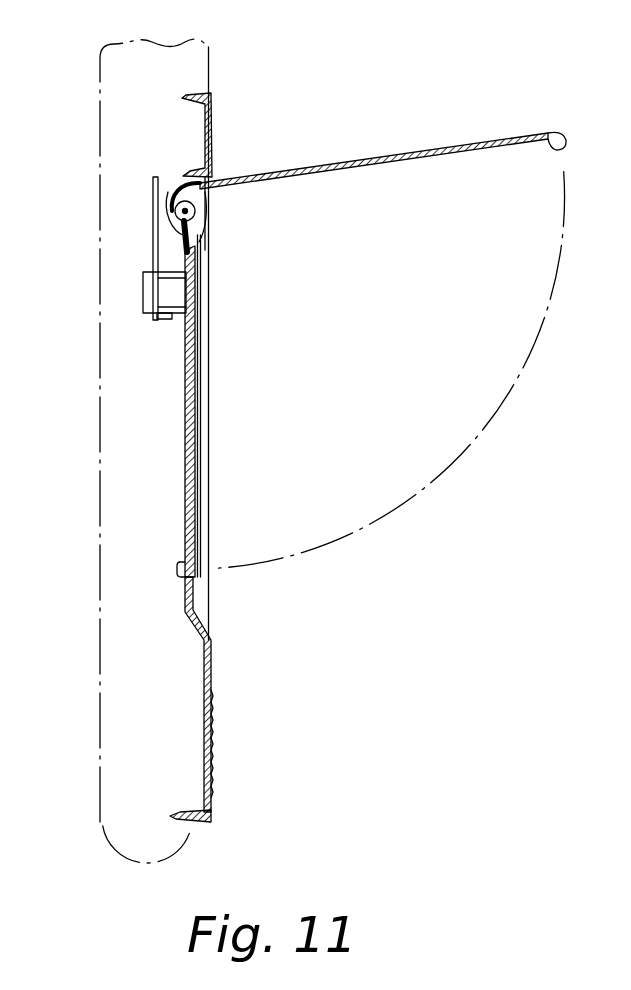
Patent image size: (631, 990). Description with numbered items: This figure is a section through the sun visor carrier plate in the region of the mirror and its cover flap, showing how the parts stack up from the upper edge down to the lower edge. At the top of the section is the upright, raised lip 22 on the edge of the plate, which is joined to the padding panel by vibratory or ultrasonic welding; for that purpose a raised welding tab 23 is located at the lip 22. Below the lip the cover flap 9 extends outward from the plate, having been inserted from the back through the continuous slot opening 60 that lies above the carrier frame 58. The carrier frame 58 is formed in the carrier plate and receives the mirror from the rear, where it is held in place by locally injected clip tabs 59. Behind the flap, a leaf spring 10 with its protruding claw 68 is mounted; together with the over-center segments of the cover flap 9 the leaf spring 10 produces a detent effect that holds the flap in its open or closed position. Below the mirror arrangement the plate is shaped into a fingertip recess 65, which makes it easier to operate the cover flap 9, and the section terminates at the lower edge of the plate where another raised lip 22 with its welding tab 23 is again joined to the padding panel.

The cover flap 9 is at (490, 150).
The leaf spring 10 is at (152, 197).
The raised lip 22 is at (178, 816).
The welding tab 23 is at (185, 97).
The carrier frame 58 is at (186, 240).
The clip tab 59 is at (178, 577).
The slot opening 60 is at (207, 197).
The fingertip recess 65 is at (202, 613).
The claw 68 is at (150, 262).